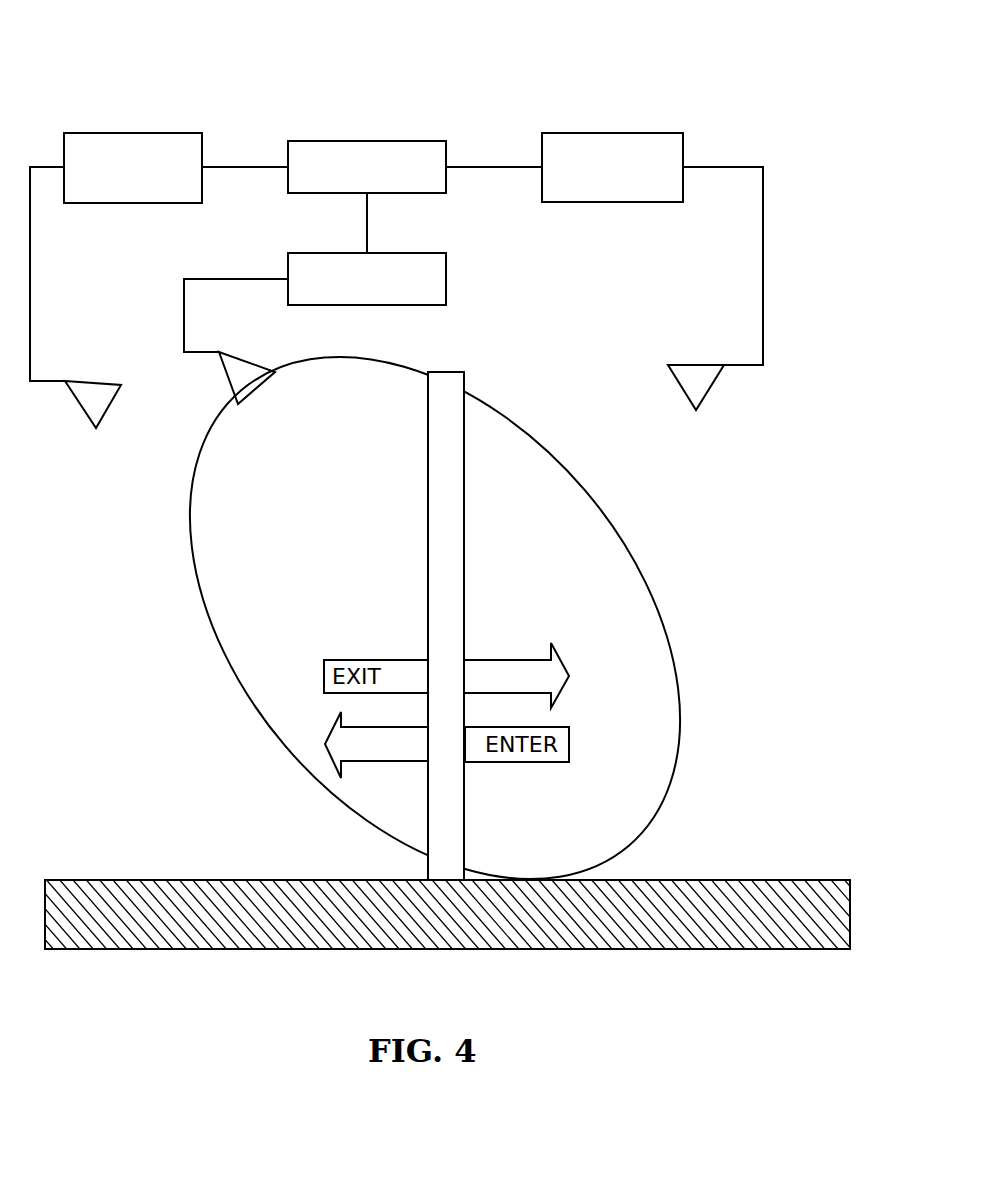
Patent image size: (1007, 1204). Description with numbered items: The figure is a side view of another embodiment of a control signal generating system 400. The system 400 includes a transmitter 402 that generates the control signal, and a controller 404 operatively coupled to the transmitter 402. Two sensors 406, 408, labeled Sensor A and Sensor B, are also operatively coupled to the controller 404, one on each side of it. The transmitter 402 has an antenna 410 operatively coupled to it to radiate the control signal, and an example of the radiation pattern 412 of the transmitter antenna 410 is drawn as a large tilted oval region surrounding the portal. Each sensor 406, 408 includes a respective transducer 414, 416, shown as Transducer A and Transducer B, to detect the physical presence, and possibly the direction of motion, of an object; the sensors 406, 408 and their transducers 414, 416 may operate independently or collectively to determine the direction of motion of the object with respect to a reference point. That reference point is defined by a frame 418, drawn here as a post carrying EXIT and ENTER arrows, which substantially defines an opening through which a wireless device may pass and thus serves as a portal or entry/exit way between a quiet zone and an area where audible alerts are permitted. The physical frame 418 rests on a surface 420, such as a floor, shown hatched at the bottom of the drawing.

The control signal generating system 400 is at (150, 62).
The transmitter 402 is at (447, 277).
The controller 404 is at (370, 141).
The sensor 406 is at (135, 133).
The sensor 408 is at (613, 133).
The antenna 410 is at (246, 361).
The radiation pattern 412 is at (493, 404).
The transducer 414 is at (93, 381).
The transducer 416 is at (697, 364).
The frame 418 is at (465, 540).
The surface 420 is at (757, 880).